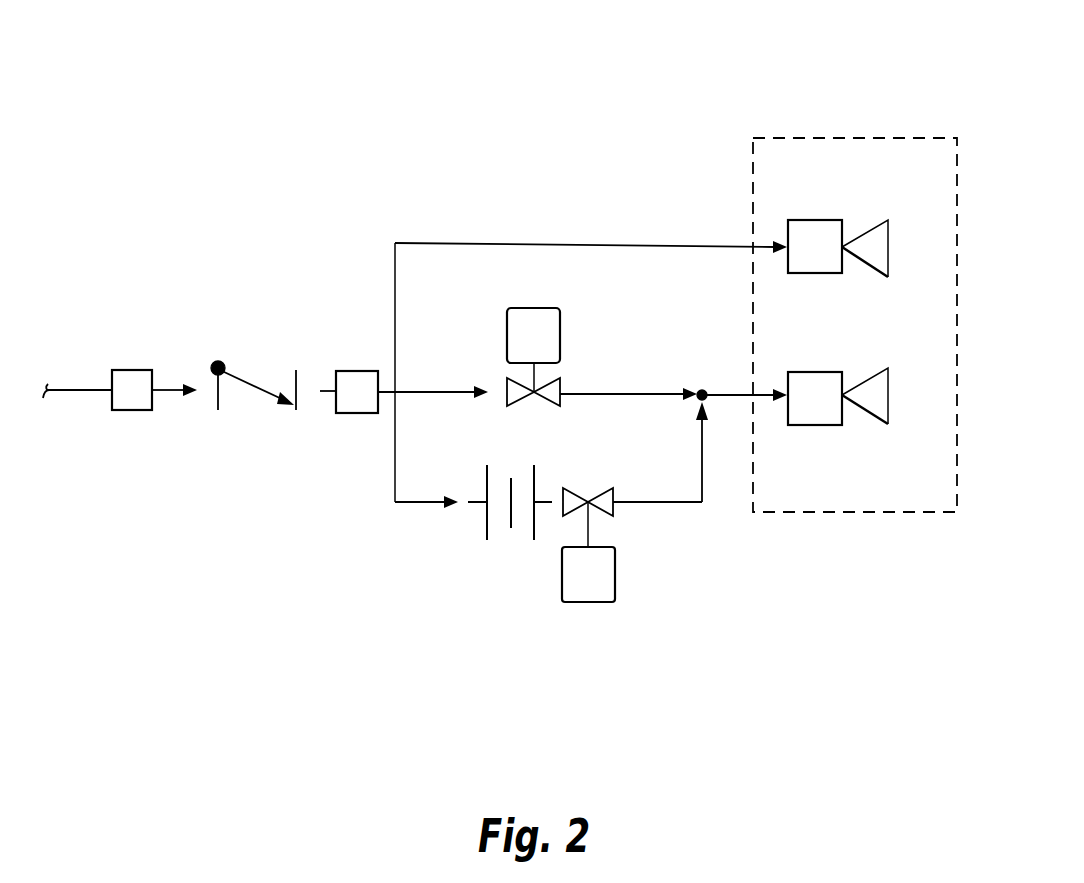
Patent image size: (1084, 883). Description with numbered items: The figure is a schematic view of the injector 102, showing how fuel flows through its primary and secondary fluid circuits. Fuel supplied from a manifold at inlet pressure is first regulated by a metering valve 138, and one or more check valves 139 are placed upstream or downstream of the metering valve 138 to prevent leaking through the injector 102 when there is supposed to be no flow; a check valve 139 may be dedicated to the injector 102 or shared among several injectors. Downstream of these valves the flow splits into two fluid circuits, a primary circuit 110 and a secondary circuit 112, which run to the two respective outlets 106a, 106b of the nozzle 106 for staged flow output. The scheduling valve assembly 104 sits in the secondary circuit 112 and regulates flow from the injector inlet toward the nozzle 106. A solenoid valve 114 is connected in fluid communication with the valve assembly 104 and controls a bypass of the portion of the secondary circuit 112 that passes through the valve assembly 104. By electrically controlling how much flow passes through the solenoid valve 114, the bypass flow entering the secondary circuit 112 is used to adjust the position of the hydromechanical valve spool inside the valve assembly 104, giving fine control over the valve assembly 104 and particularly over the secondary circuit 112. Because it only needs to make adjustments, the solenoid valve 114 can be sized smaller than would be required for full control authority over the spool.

The injector 102 is at (236, 172).
The check valve 139 is at (127, 410).
The metering valve 138 is at (241, 426).
The scheduling valve assembly 104 is at (489, 349).
The primary fluid circuit 110 is at (622, 244).
The secondary fluid circuit 112 is at (620, 395).
The solenoid valve 114 is at (636, 544).
The nozzle 106 is at (852, 137).
The primary nozzle outlet 106a is at (812, 225).
The secondary nozzle outlet 106b is at (820, 375).